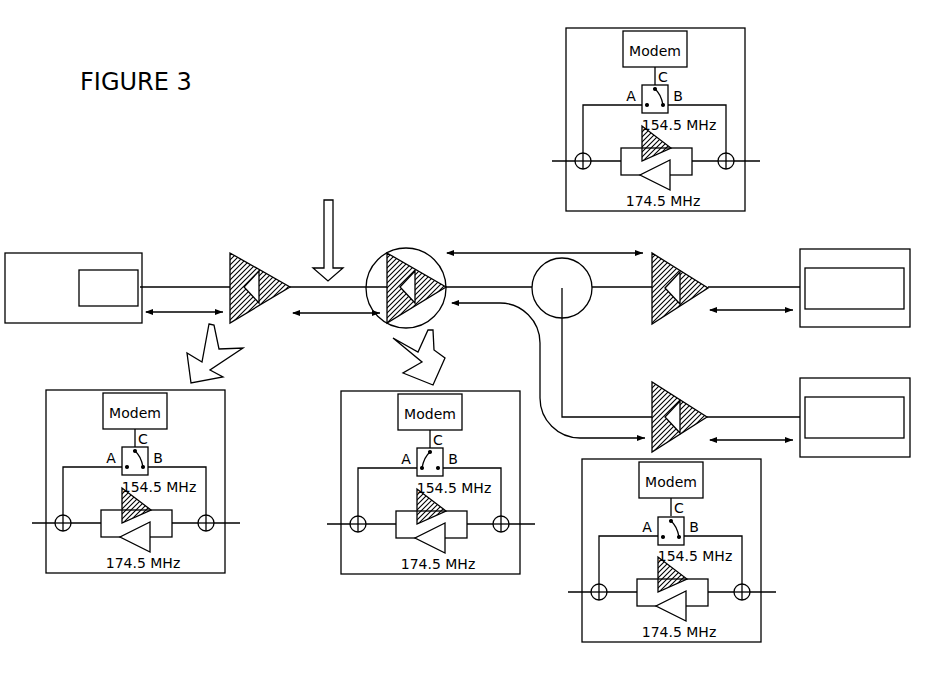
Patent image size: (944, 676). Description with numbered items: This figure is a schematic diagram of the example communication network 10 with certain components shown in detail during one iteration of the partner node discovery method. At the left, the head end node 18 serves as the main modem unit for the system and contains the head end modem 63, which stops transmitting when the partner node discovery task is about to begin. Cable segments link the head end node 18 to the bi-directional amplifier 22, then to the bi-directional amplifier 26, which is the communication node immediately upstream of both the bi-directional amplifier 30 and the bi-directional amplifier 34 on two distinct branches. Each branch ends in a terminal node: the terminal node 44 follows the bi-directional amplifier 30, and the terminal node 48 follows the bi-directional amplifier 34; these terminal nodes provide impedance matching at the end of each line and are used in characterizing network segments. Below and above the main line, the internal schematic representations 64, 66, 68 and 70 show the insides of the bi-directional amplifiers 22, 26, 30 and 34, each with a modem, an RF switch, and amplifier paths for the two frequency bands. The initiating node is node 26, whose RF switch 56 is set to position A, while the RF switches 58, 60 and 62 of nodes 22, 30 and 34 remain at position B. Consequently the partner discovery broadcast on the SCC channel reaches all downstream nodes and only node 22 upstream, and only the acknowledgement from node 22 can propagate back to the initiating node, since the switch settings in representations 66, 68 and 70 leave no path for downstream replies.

The communication network 10 is at (481, 212).
The head end node 18 is at (73, 287).
The bi-directional amplifier 22 is at (231, 253).
The bi-directional amplifier 26 is at (386, 253).
The bi-directional amplifier 30 is at (697, 279).
The bi-directional amplifier 34 is at (697, 406).
The terminal node 44 is at (893, 249).
The terminal node 48 is at (893, 378).
The RF switch 56 is at (445, 450).
The RF switch 58 is at (149, 449).
The RF switch 60 is at (669, 89).
The RF switch 62 is at (685, 521).
The head end modem 63 is at (108, 307).
The internal schematic representation of BDA 22 64 is at (136, 509).
The internal schematic representation of BDA 26 66 is at (425, 514).
The internal schematic representation of BDA 30 68 is at (687, 119).
The internal schematic representation of BDA 34 70 is at (705, 550).